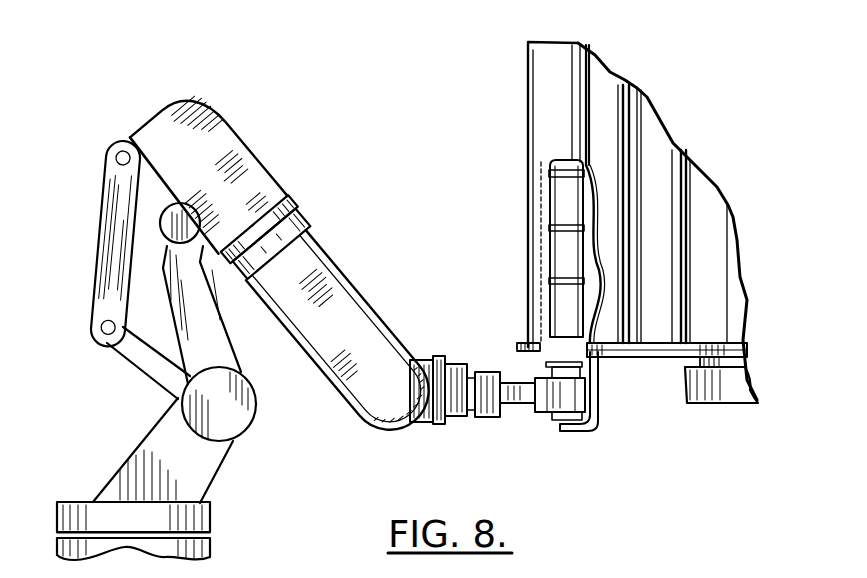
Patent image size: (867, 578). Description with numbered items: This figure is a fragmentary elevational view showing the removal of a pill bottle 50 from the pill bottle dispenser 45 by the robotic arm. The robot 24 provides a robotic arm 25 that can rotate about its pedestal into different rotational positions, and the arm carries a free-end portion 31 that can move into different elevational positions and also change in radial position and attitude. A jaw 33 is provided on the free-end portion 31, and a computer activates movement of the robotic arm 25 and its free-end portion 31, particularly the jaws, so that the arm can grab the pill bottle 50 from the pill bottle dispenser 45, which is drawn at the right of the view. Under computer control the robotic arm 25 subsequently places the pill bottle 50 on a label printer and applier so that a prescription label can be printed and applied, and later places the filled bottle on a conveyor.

The robot 24 is at (84, 193).
The robotic arm 25 is at (347, 303).
The free-end portion 31 is at (517, 402).
The jaw 33 is at (571, 396).
The pill bottle dispenser 45 is at (610, 105).
The pill bottle 50 is at (548, 363).